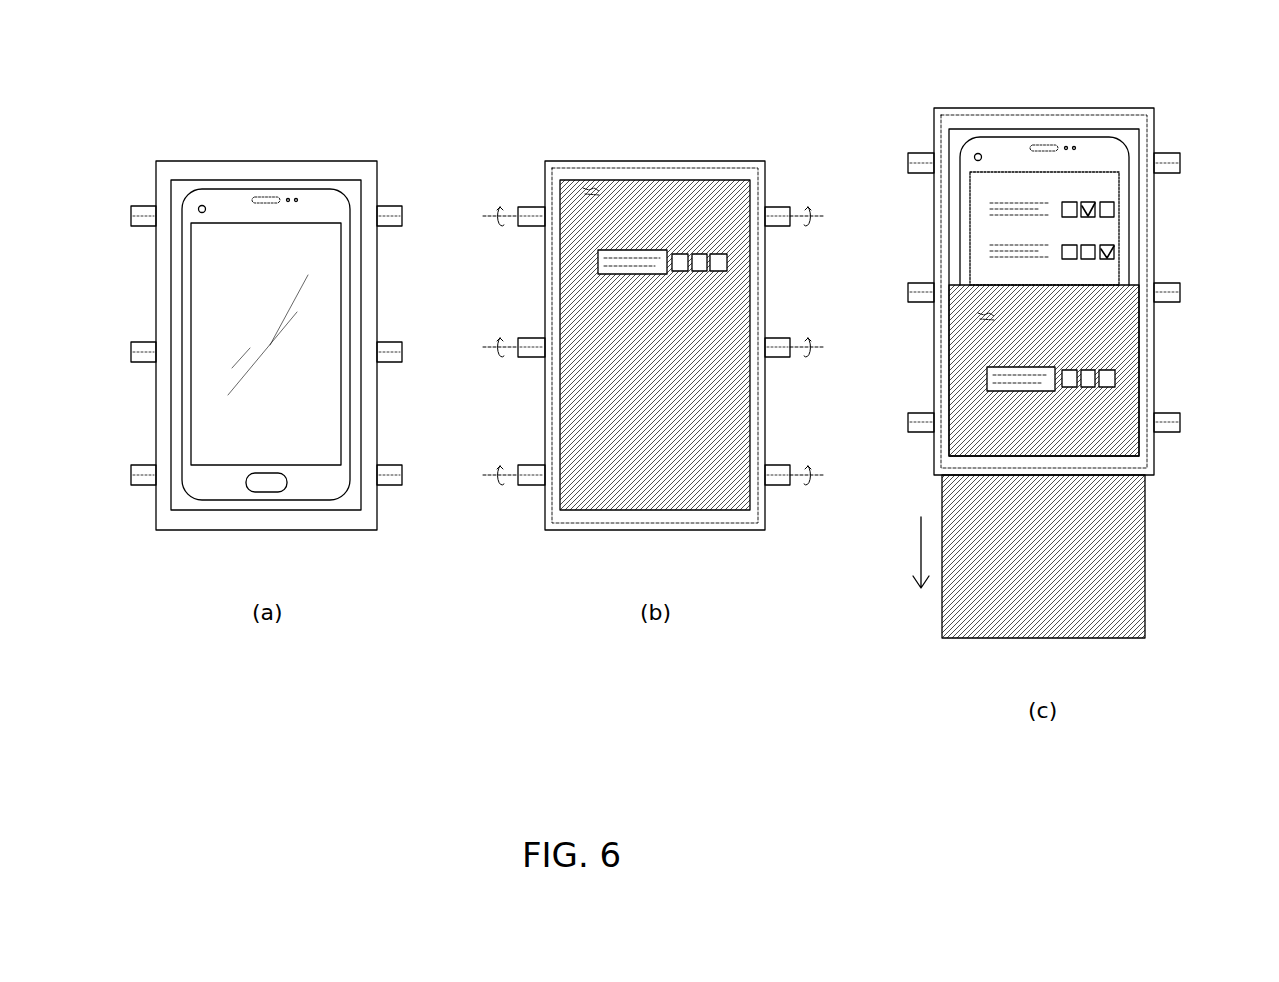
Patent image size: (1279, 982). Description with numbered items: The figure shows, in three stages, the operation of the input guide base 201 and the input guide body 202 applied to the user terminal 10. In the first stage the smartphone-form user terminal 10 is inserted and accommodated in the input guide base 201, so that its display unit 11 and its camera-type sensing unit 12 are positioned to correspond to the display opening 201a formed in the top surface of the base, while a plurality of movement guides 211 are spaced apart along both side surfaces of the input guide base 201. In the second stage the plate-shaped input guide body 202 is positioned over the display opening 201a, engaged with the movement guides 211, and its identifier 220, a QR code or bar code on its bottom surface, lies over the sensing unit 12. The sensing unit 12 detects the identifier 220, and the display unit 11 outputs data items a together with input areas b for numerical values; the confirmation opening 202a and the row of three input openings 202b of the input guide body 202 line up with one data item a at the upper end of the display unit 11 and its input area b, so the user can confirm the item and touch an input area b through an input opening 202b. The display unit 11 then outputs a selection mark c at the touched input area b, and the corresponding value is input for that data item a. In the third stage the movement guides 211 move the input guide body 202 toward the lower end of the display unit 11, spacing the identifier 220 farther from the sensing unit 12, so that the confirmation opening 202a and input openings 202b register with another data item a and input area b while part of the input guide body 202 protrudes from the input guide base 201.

The user terminal 10 is at (298, 188).
The display unit 11 is at (241, 243).
The sensing unit 12 is at (203, 205).
The input guide base 201 is at (382, 177).
The display opening 201a is at (173, 290).
The movement guide 211 is at (140, 198).
The input guide body 202 is at (656, 220).
The confirmation opening 202a is at (598, 259).
The input opening 202b is at (718, 253).
The identifier 220 is at (592, 188).
The data item a is at (628, 275).
The input area b is at (700, 271).
The selection mark c is at (1093, 216).